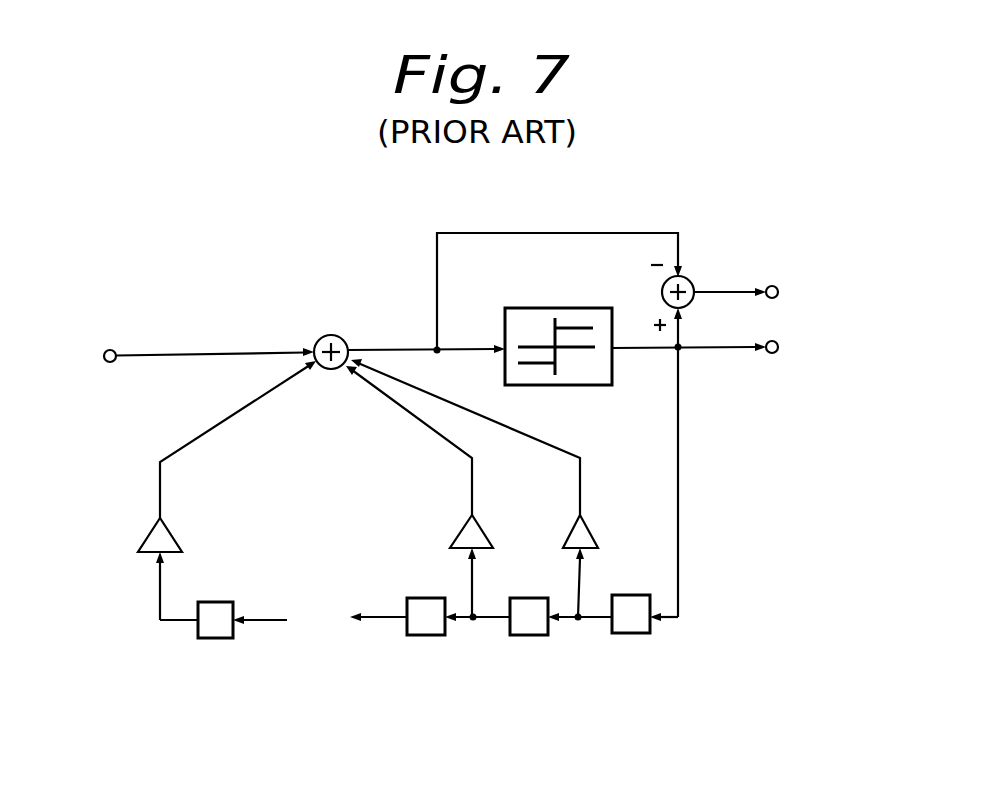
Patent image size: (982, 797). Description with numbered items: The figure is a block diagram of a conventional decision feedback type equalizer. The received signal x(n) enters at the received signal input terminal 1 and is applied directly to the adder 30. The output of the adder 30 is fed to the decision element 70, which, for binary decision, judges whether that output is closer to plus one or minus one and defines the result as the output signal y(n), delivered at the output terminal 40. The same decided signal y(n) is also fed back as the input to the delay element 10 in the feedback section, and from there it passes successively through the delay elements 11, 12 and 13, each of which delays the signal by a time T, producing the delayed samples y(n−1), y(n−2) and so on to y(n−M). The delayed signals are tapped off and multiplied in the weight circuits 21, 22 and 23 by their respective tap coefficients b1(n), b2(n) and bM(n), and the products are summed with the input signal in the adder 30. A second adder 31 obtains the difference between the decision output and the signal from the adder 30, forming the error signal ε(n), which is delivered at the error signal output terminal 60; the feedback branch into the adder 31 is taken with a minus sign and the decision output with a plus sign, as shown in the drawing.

The received signal input terminal 1 is at (110, 362).
The delay element 10 is at (652, 633).
The delay element 11 is at (532, 637).
The delay element 12 is at (414, 637).
The delay element 13 is at (222, 640).
The weight circuit 21 is at (583, 514).
The weight circuit 22 is at (468, 520).
The weight circuit 23 is at (163, 518).
The adder 30 is at (333, 336).
The adder 31 is at (690, 280).
The output terminal 40 is at (772, 353).
The error signal output terminal 60 is at (767, 286).
The decision element 70 is at (544, 308).